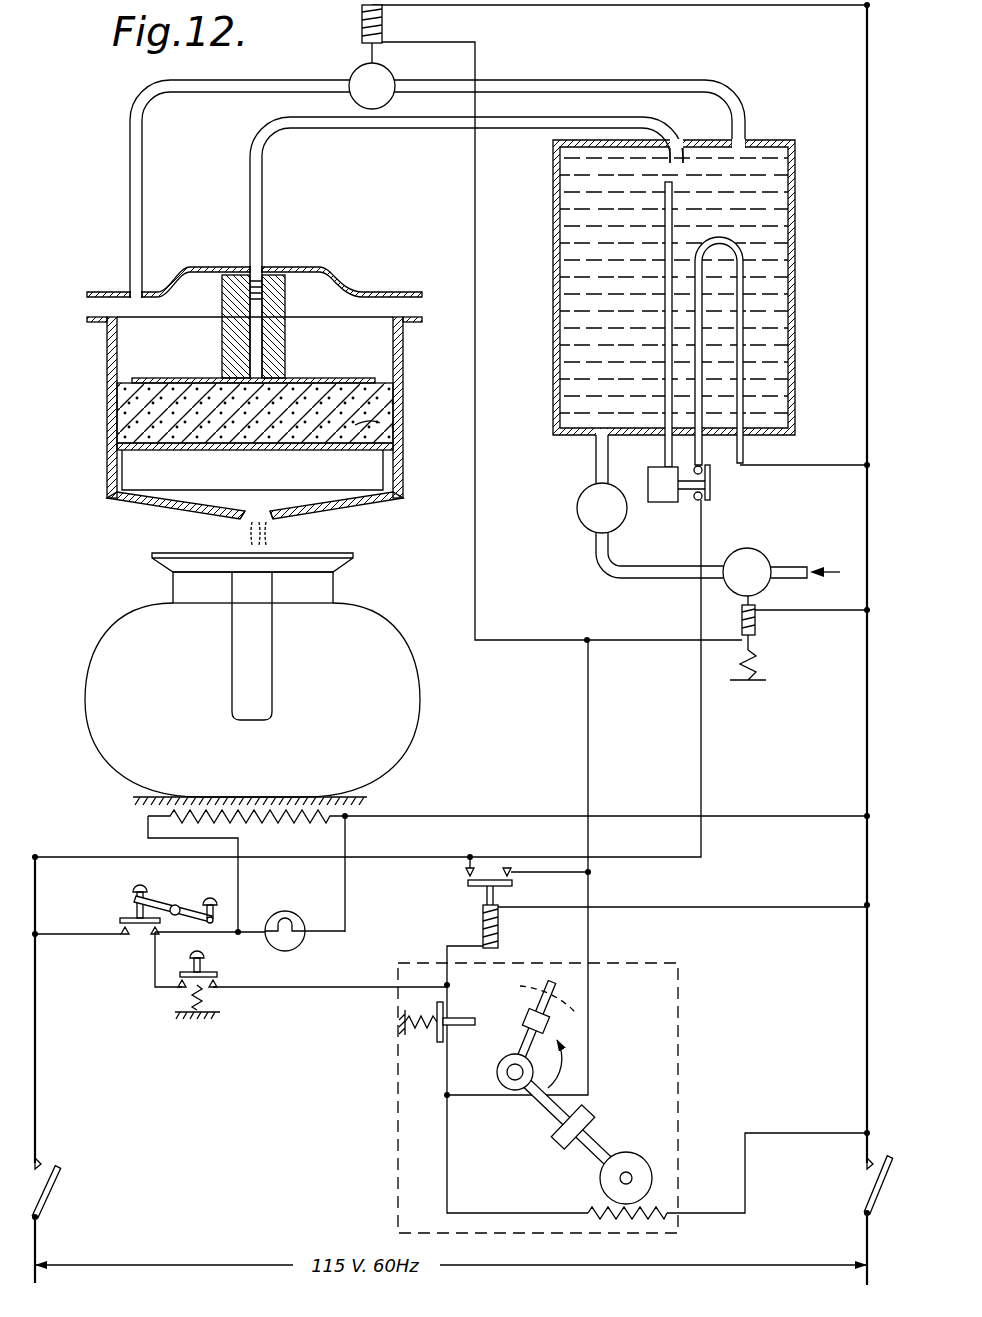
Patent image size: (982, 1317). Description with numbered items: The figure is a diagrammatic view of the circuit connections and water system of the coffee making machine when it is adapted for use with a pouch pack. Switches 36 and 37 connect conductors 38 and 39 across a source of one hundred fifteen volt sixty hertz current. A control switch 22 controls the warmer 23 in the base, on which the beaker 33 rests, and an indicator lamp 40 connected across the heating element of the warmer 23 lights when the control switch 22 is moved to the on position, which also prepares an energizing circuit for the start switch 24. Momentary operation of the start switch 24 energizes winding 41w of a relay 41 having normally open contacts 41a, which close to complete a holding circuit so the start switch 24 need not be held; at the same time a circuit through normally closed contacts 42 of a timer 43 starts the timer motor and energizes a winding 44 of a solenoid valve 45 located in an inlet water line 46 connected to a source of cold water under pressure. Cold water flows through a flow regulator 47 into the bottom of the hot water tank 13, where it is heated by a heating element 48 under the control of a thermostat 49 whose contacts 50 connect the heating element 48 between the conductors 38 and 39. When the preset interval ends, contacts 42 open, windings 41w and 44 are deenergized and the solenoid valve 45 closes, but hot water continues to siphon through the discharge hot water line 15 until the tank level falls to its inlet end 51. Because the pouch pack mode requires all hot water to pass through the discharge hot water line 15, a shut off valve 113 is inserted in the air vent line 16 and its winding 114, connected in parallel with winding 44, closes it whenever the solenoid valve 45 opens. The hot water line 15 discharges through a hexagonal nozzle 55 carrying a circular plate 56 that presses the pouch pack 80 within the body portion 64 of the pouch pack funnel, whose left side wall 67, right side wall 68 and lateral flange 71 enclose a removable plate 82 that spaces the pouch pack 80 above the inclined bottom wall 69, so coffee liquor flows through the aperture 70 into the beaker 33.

The hot water tank 13 is at (797, 276).
The discharge hot water line 15 is at (422, 133).
The air vent line 16 is at (578, 82).
The control switch 22 is at (118, 908).
The warmer 23 is at (374, 804).
The start switch 24 is at (218, 1003).
The beaker 33 is at (392, 622).
The switch 36 is at (52, 1163).
The switch 37 is at (876, 1170).
The conductor 38 is at (38, 1086).
The conductor 39 is at (866, 1036).
The indicator lamp 40 is at (293, 913).
The relay 41 is at (487, 888).
The normally open contacts 41a is at (491, 877).
The relay winding 41w is at (500, 928).
The normally closed contacts 42 is at (446, 1016).
The timer 43 is at (688, 1046).
The winding 44 is at (758, 618).
The solenoid valve 45 is at (754, 548).
The inlet water line 46 is at (658, 588).
The flow regulator 47 is at (582, 527).
The heating element 48 is at (745, 350).
The thermostat 49 is at (664, 306).
The contacts 50 is at (695, 496).
The inlet end 51 is at (683, 164).
The hexagonal nozzle 55 is at (288, 342).
The circular plate 56 is at (188, 378).
The body portion 64 is at (256, 410).
The left side wall 67 is at (106, 366).
The right side wall 68 is at (404, 375).
The bottom wall 69 is at (347, 509).
The aperture 70 is at (248, 521).
The lateral flange 71 is at (416, 319).
The pouch pack 80 is at (268, 418).
The removable plate 82 is at (358, 432).
The shut off valve 113 is at (352, 72).
The winding 114 is at (360, 22).